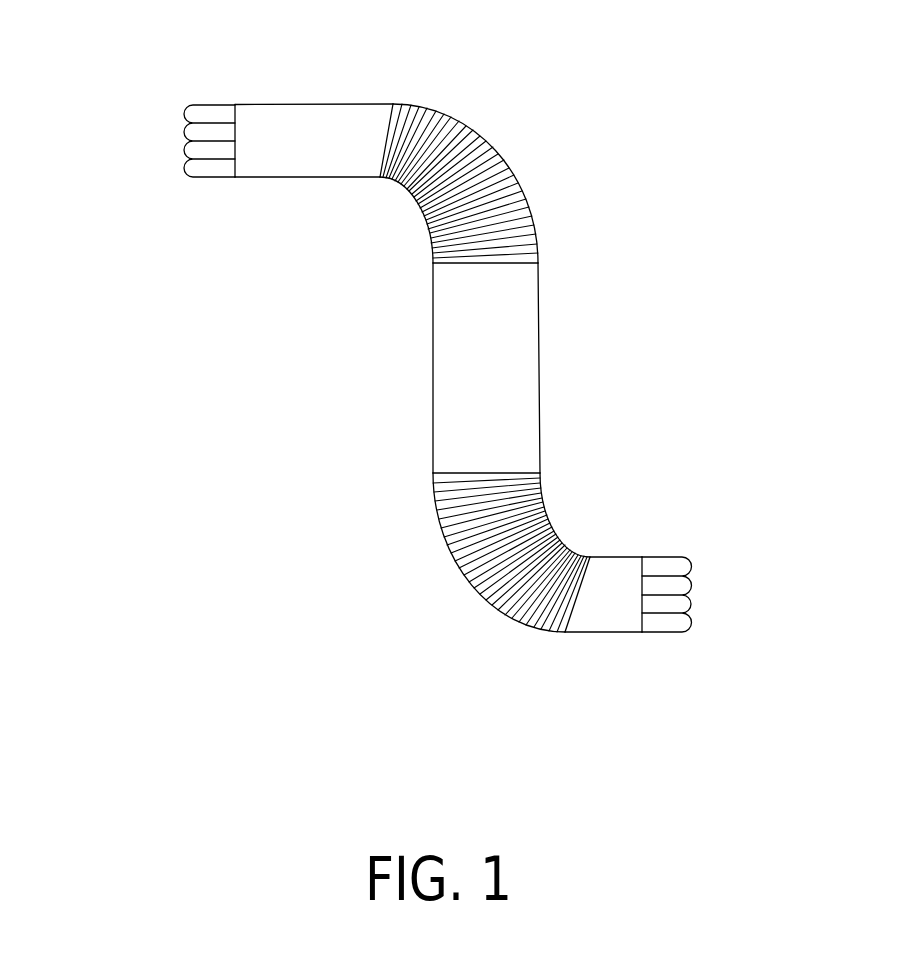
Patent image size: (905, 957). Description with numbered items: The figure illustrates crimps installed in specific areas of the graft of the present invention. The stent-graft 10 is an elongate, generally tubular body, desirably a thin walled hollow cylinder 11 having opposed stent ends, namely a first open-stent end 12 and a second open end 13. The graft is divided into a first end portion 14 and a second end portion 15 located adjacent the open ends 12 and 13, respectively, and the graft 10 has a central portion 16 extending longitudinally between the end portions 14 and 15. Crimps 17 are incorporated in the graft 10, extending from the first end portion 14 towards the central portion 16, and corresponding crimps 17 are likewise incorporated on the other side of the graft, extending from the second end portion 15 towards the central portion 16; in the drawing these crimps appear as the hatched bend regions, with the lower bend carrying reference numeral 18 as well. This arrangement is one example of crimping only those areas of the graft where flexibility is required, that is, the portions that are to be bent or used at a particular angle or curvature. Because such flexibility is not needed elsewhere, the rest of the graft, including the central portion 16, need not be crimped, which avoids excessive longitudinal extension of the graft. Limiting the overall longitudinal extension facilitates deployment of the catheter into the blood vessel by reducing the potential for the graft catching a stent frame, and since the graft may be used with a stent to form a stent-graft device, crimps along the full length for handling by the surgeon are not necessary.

The stent-graft 10 is at (442, 386).
The thin walled hollow cylinder 11 is at (460, 386).
The first open-stent end 12 is at (187, 132).
The second open end 13 is at (693, 568).
The first end portion 14 is at (317, 140).
The second end portion 15 is at (608, 605).
The central portion 16 is at (492, 372).
The crimps 17 is at (463, 140).
The second bend section 18 is at (455, 555).